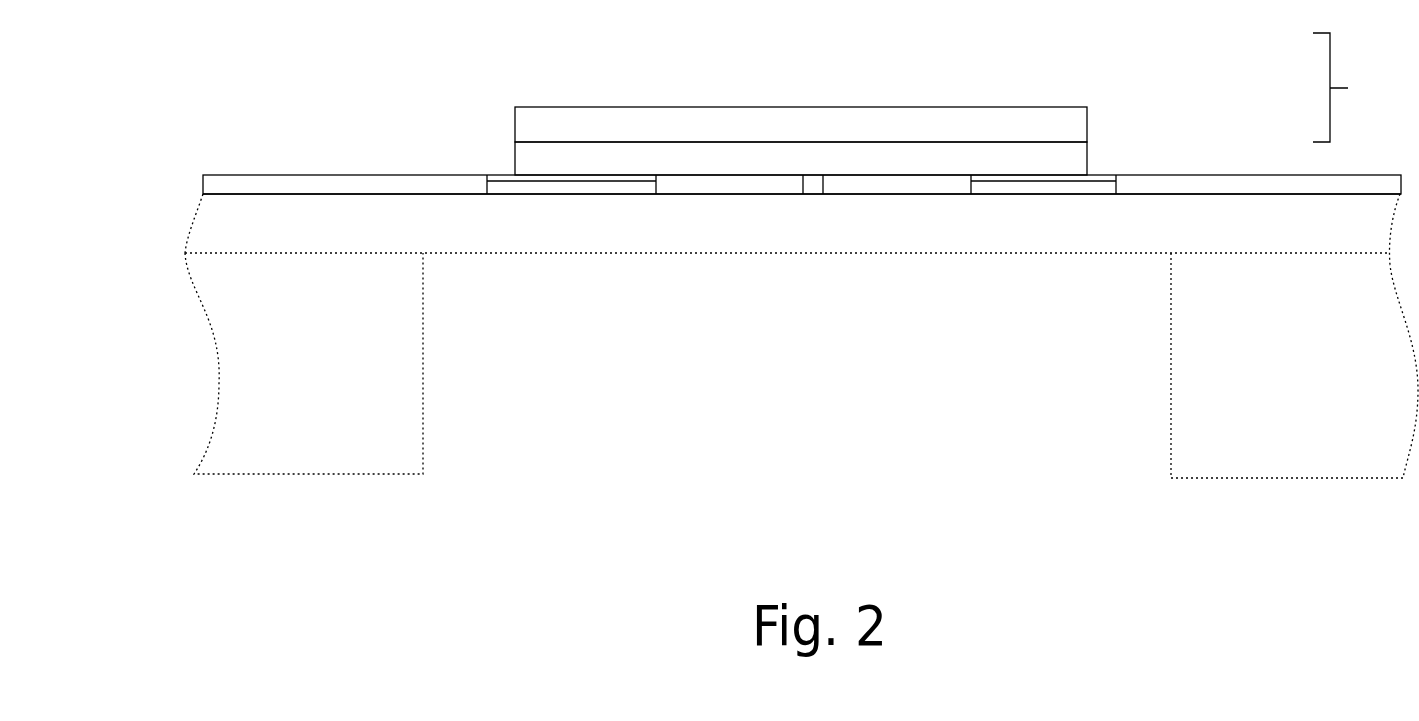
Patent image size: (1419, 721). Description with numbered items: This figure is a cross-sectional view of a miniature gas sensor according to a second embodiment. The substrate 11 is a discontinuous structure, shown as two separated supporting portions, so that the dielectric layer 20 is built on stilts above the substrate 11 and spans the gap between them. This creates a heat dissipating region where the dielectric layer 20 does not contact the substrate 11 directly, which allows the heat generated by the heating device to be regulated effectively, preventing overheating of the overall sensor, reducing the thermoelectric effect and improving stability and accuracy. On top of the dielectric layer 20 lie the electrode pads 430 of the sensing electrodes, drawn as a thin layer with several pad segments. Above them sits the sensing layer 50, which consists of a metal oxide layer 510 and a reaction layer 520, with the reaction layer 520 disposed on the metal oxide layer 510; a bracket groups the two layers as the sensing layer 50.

The substrate 11 is at (323, 365).
The dielectric layer 20 is at (230, 227).
The electrode pads 430 is at (418, 182).
The sensing layer 50 is at (1366, 87).
The metal oxide layer 510 is at (1075, 165).
The reaction layer 520 is at (1063, 120).